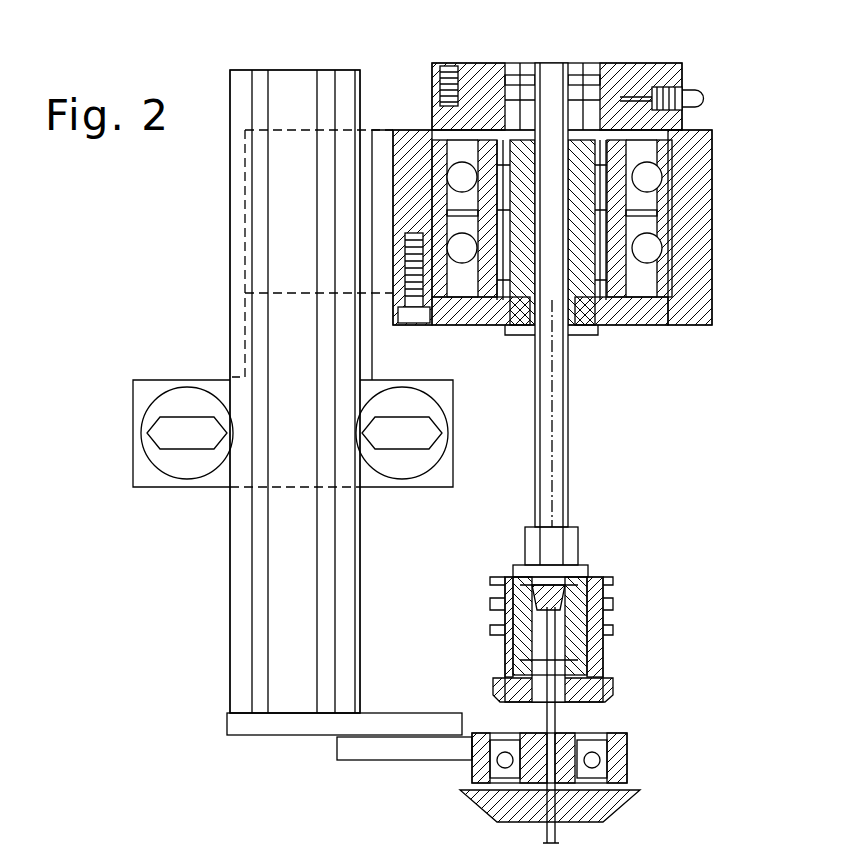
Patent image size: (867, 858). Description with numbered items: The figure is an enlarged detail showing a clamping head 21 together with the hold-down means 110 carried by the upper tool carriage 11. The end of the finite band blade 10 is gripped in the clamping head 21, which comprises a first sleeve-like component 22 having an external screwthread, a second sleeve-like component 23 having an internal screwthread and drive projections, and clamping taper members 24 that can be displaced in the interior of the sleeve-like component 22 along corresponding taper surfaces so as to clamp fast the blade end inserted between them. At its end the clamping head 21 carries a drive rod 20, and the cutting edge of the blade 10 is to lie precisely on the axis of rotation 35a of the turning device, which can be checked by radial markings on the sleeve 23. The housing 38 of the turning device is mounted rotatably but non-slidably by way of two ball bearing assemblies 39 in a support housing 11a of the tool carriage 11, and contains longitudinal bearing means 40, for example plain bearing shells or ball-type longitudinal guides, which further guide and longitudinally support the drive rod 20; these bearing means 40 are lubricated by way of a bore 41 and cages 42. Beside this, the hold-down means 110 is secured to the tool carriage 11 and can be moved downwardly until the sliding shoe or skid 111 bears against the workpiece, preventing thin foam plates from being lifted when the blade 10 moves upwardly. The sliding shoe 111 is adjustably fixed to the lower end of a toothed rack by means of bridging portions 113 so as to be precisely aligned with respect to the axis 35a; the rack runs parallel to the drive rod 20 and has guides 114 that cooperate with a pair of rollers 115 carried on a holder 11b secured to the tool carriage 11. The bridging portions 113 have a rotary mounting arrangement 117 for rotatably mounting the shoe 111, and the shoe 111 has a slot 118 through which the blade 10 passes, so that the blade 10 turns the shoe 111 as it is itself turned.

The band blade 10 is at (547, 720).
The tool carriage 11 is at (344, 785).
The support housing 11a is at (700, 277).
The holder 11b is at (142, 390).
The drive rod 20 is at (550, 77).
The clamping head 21 is at (598, 545).
The first sleeve-like component 22 is at (592, 570).
The second sleeve-like component 23 is at (498, 607).
The clamping taper members 24 is at (558, 657).
The axis of rotation 35a is at (552, 400).
The housing of the turning device 38 is at (483, 90).
The ball bearing assemblies 39 is at (660, 180).
The longitudinal bearing means 40 is at (572, 330).
The bore 41 is at (622, 90).
The cages 42 is at (660, 227).
The hold-down means 110 is at (228, 678).
The sliding shoe 111 is at (602, 805).
The bridging portions 113 is at (307, 727).
The guides 114 is at (230, 632).
The rollers 115 is at (180, 465).
The rotary mounting arrangement 117 is at (603, 757).
The slot 118 is at (555, 730).